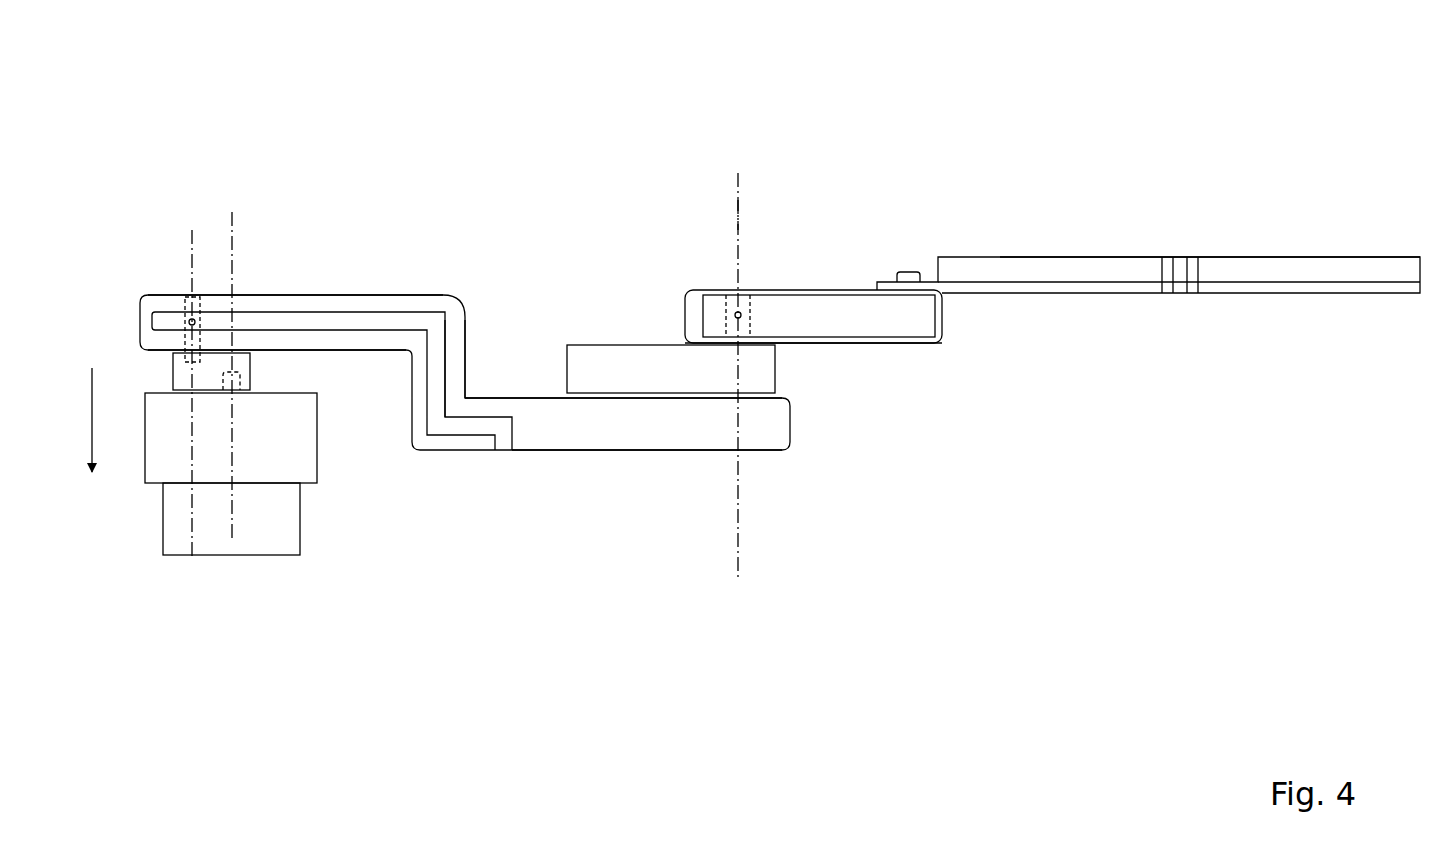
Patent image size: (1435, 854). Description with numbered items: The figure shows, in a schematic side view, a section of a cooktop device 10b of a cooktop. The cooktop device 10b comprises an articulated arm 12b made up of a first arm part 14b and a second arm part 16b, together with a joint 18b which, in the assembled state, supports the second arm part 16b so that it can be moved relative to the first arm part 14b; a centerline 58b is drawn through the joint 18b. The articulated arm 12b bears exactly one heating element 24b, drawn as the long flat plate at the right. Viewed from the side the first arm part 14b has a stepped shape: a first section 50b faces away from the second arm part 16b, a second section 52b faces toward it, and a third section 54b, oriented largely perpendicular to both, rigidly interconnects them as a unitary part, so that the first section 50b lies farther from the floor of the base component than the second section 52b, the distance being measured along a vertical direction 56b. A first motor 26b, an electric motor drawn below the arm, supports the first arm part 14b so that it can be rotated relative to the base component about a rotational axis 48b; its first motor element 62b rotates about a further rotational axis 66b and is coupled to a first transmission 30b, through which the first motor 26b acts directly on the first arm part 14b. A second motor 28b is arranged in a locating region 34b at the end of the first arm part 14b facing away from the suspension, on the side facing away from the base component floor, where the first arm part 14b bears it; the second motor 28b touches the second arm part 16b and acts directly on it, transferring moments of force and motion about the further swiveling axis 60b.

The cooktop device 10b is at (1356, 140).
The articulated arm 12b is at (790, 119).
The first arm part 14b is at (432, 294).
The second arm part 16b is at (830, 290).
The joint 18b is at (713, 278).
The heating element 24b is at (1260, 270).
The first motor 26b is at (242, 582).
The second motor 28b is at (797, 372).
The first transmission 30b is at (173, 375).
The locating region 34b is at (547, 389).
The rotational axis 48b is at (192, 242).
The first section 50b is at (392, 295).
The second section 52b is at (617, 453).
The third section 54b is at (487, 372).
The vertical direction 56b is at (93, 423).
The pivot axis 58b is at (740, 207).
The further swiveling axis 60b is at (692, 208).
The first motor element 62b is at (247, 380).
The further rotational axis 66b is at (232, 226).